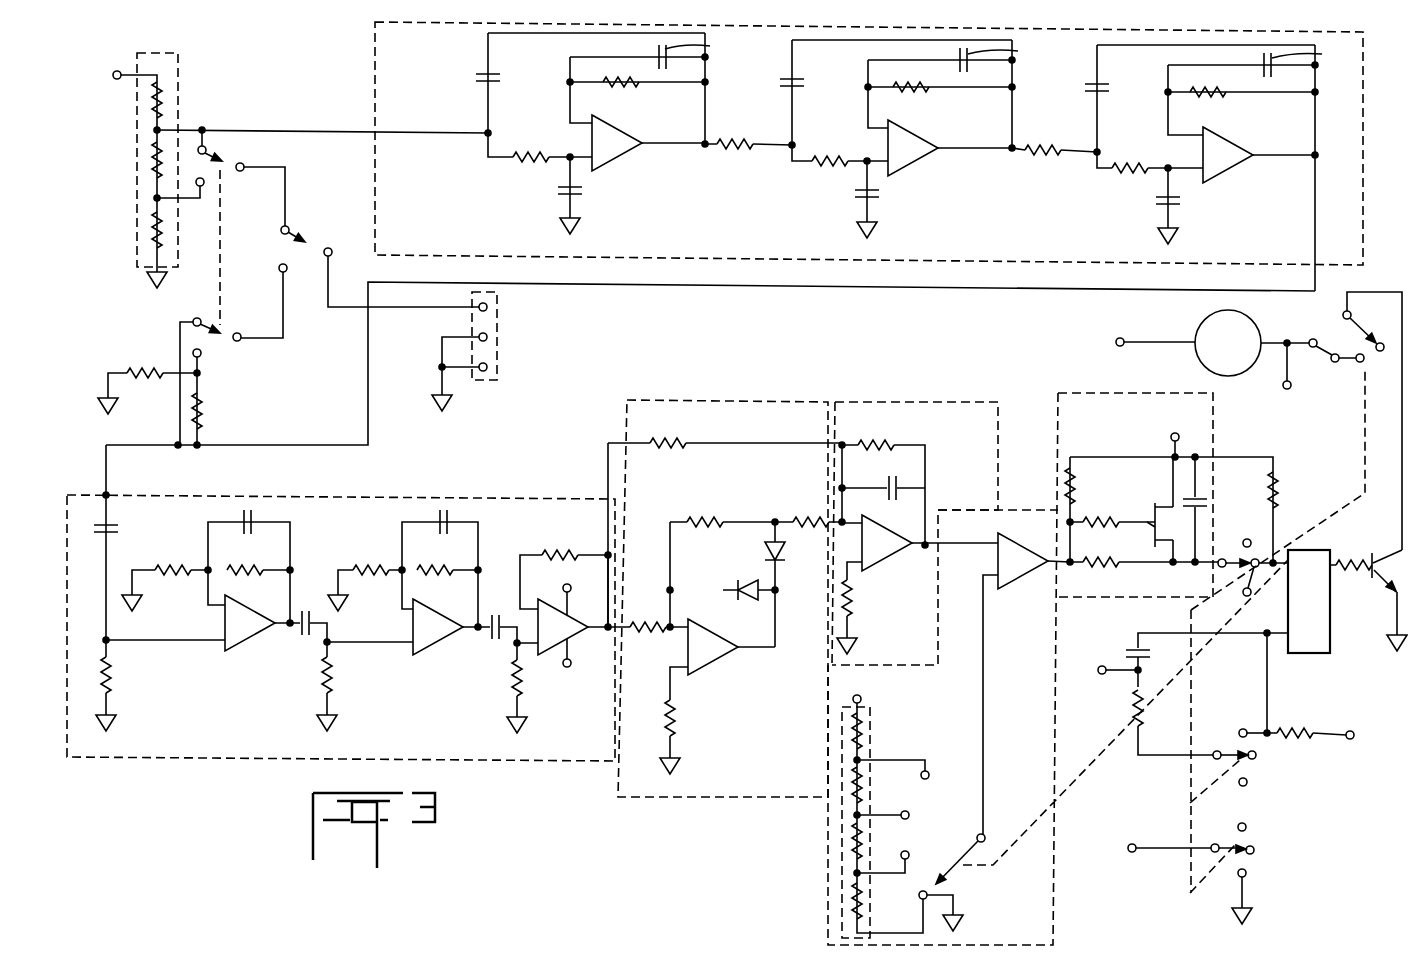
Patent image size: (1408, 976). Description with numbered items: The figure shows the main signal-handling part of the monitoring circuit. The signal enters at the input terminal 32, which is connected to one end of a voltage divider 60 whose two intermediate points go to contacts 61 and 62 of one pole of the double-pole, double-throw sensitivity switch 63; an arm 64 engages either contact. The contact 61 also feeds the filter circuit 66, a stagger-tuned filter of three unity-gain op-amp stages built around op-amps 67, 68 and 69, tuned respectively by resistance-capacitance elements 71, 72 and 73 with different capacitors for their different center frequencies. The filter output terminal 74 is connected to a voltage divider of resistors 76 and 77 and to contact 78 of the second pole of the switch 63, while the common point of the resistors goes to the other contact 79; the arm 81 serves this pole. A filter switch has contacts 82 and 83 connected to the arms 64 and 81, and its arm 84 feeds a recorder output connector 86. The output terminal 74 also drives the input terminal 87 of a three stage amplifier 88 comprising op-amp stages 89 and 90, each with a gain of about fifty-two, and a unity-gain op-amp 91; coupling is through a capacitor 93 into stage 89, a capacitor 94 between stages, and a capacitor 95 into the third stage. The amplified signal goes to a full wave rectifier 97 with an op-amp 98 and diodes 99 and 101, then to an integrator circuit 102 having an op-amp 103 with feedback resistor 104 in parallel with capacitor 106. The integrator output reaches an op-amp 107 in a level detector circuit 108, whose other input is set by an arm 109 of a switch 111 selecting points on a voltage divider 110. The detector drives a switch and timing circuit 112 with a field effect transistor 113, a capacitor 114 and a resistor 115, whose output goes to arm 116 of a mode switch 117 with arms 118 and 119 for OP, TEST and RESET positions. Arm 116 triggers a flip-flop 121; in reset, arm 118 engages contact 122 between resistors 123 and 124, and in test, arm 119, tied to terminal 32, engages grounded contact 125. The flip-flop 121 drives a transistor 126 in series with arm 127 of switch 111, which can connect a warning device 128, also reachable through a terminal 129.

The signal input terminal 32 is at (113, 75).
The voltage divider 60 is at (166, 53).
The contact 61 is at (205, 147).
The contact 62 is at (205, 185).
The sensitivity switch 63 is at (222, 253).
The arm 64 is at (240, 165).
The filter circuit 66 is at (373, 80).
The op-amp 67 is at (620, 158).
The op-amp 68 is at (917, 165).
The op-amp 69 is at (1238, 170).
The resistance-capacitance element 71 is at (615, 133).
The resistance-capacitance element 72 is at (921, 138).
The resistance-capacitance element 73 is at (1226, 144).
The output terminal 74 is at (1318, 155).
The resistor 76 is at (202, 405).
The resistor 77 is at (167, 370).
The contact 78 is at (201, 353).
The contact 79 is at (197, 318).
The arm 81 is at (234, 334).
The contact 82 is at (281, 232).
The contact 83 is at (280, 271).
The arm 84 is at (334, 239).
The recorder output connector 86 is at (472, 313).
The input terminal 87 is at (109, 495).
The three stage amplifier 88 is at (366, 497).
The op-amp stage 89 is at (247, 645).
The op-amp stage 90 is at (437, 648).
The op-amp 91 is at (580, 640).
The capacitor 93 is at (111, 528).
The capacitor 94 is at (302, 615).
The capacitor 95 is at (492, 620).
The full wave rectifier 97 is at (728, 400).
The op-amp 98 is at (712, 670).
The diode 99 is at (787, 553).
The diode 101 is at (749, 614).
The integrator circuit 102 is at (936, 401).
The op-amp 103 is at (888, 565).
The resistor 104 is at (896, 445).
The capacitor 106 is at (888, 488).
The op-amp 107 is at (1020, 582).
The level detector circuit 108 is at (1022, 509).
The arm 109 is at (959, 858).
The voltage divider 110 is at (873, 732).
The switch 111 is at (1083, 778).
The switch and timing circuit 112 is at (1215, 434).
The field effect transistor 113 is at (1152, 520).
The capacitor 114 is at (1200, 502).
The resistor 115 is at (1100, 566).
The arm 116 is at (1245, 540).
The switch 117 is at (1196, 690).
The arm 118 is at (1227, 745).
The arm 119 is at (1213, 831).
The flip-flop 121 is at (1302, 548).
The contact 122 is at (1246, 729).
The resistor 123 is at (1130, 703).
The resistor 124 is at (1282, 738).
The grounded contact 125 is at (1246, 873).
The transistor 126 is at (1369, 579).
The arm 127 is at (1352, 421).
The warning device 128 is at (1248, 376).
The terminal 129 is at (1290, 389).